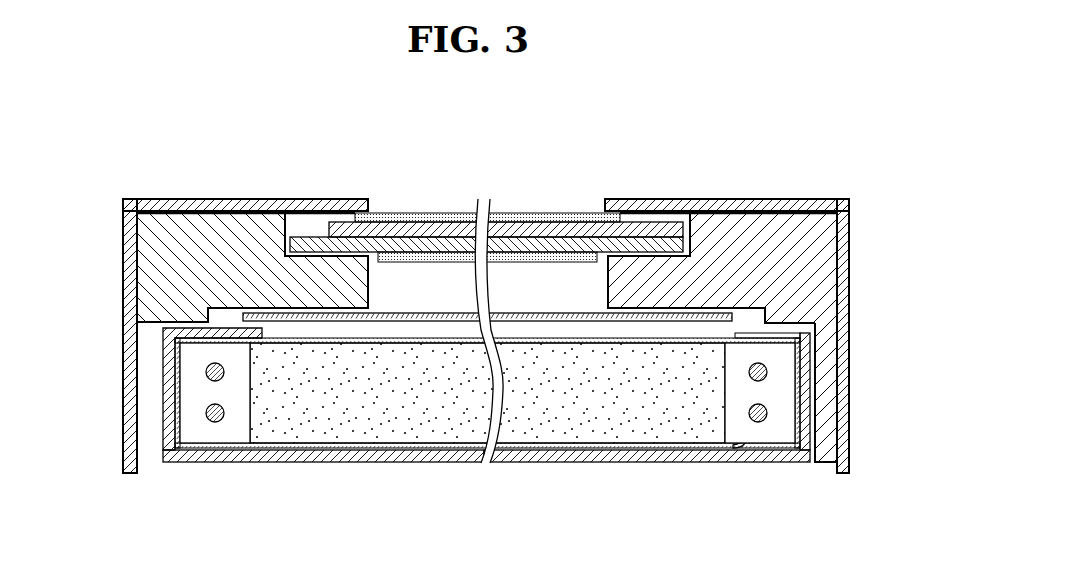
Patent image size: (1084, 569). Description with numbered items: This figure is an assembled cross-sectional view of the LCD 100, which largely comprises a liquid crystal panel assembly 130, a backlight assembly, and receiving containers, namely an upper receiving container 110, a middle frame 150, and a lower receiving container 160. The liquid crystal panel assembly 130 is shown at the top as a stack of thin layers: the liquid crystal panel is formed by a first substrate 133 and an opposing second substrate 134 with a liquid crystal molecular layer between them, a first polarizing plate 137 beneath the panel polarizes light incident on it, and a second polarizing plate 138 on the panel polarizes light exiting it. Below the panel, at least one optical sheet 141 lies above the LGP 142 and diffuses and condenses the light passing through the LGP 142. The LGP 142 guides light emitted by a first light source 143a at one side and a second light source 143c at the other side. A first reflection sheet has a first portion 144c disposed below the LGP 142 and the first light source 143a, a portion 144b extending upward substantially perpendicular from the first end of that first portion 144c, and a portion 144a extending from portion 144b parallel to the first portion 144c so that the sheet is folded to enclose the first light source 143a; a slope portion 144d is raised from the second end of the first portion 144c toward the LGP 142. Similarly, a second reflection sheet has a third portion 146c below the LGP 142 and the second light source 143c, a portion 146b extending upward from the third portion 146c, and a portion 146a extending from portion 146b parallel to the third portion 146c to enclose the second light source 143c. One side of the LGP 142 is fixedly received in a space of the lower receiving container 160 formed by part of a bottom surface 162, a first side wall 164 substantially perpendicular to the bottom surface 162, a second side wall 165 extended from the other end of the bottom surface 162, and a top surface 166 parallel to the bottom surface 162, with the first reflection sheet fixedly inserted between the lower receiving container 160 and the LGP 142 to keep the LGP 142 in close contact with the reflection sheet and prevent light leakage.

The LCD 100 is at (705, 111).
The upper receiving container 110 is at (233, 198).
The liquid crystal panel assembly 130 is at (484, 181).
The first substrate 133 is at (296, 236).
The second substrate 134 is at (340, 222).
The first polarizing plate 137 is at (415, 214).
The second polarizing plate 138 is at (487, 201).
The optical sheet 141 is at (733, 316).
The LGP 142 is at (542, 355).
The first light source 143a is at (216, 423).
The second light source 143c is at (767, 422).
The portion of second portion of first reflection sheet 144a is at (288, 452).
The portion of second portion of first reflection sheet 144b is at (178, 408).
The first portion of first reflection sheet 144c is at (342, 462).
The slope portion 144d is at (743, 449).
The portion of fourth portion of second reflection sheet 146a is at (770, 337).
The portion of fourth portion of second reflection sheet 146b is at (808, 380).
The third portion of second reflection sheet 146c is at (658, 462).
The middle frame 150 is at (160, 263).
The lower receiving container 160 is at (423, 440).
The bottom surface 162 is at (707, 430).
The first side wall 164 is at (172, 388).
The second side wall 165 is at (826, 418).
The top surface 166 is at (200, 313).